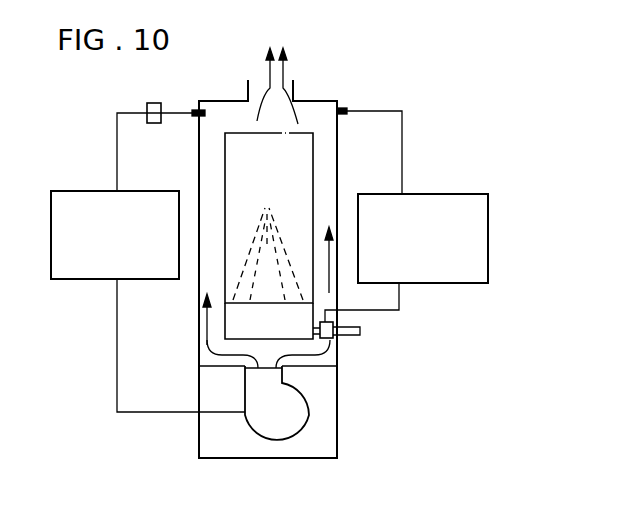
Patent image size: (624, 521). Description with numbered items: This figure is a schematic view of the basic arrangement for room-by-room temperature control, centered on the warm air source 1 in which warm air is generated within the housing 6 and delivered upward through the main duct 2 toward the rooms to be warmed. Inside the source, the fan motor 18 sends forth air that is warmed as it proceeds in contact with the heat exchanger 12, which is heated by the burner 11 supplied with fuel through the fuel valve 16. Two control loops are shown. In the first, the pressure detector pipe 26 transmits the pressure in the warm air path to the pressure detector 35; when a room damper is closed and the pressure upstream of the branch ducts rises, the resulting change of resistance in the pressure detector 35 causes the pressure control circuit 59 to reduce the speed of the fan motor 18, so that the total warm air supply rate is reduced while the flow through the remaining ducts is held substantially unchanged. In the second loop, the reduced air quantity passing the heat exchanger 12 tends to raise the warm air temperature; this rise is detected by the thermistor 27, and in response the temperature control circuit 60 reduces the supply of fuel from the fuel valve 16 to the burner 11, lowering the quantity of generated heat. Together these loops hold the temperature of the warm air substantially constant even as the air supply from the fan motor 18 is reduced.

The warm air source 1 is at (207, 279).
The main duct 2 is at (286, 81).
The housing 6 is at (337, 356).
The burner 11 is at (307, 305).
The heat exchanger 12 is at (315, 182).
The fuel valve 16 is at (332, 339).
The fan motor 18 is at (312, 425).
The pressure detector pipe 26 is at (197, 116).
The thermistor 27 is at (344, 114).
The pressure detector 35 is at (149, 122).
The pressure control circuit 59 is at (93, 191).
The temperature control circuit 60 is at (468, 194).